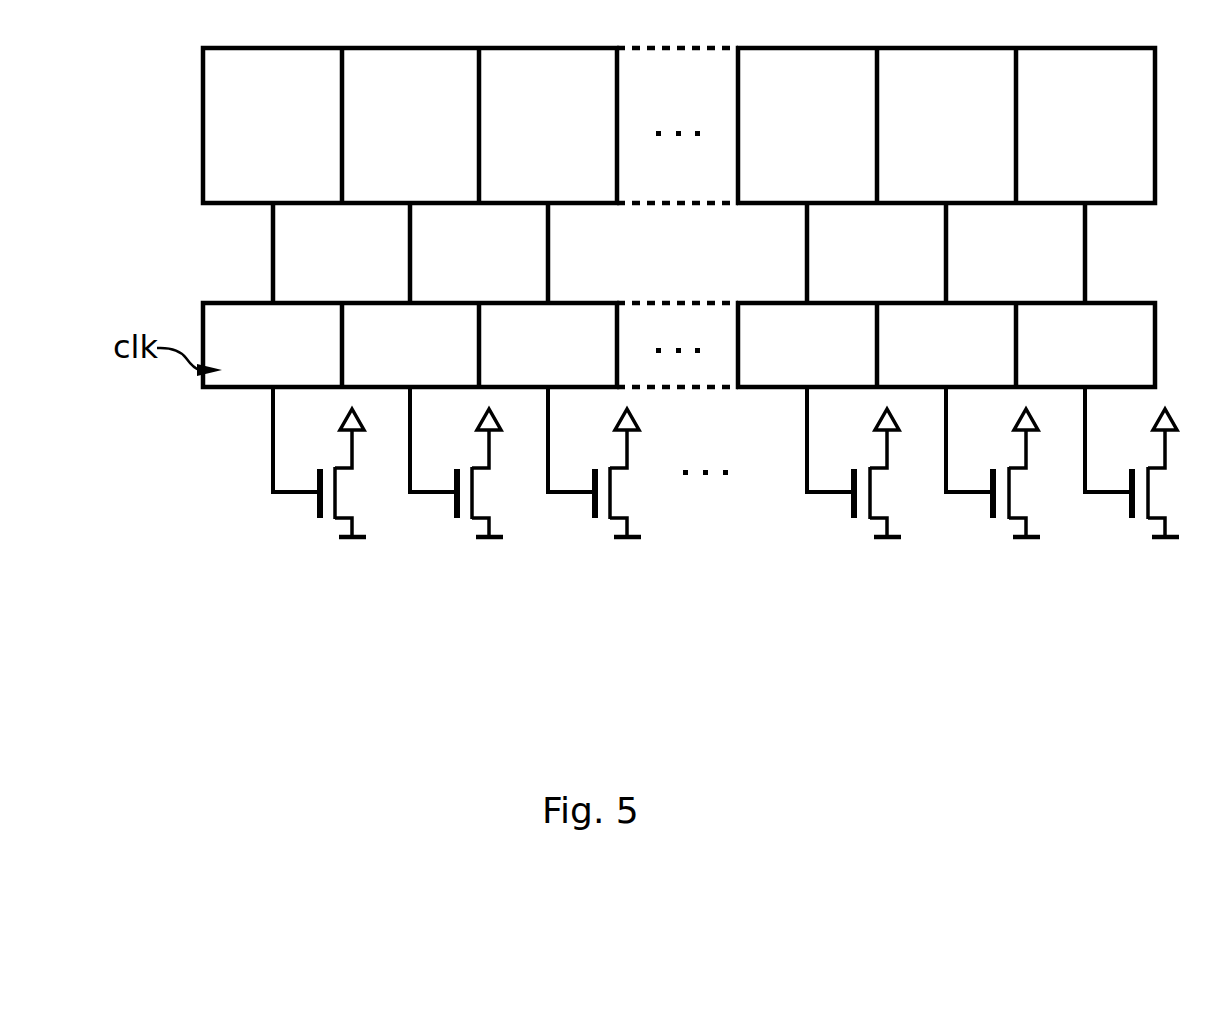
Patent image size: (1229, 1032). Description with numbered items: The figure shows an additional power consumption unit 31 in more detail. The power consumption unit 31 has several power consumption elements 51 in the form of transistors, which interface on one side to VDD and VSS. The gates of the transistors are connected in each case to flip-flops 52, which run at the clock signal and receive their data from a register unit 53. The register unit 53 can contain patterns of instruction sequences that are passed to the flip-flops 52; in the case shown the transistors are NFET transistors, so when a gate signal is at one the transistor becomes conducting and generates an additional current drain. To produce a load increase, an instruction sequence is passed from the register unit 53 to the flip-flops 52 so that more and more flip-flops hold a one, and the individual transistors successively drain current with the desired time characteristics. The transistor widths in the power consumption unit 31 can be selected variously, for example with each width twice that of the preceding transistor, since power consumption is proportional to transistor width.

The register unit 53 is at (213, 120).
The flip-flops 52 is at (218, 308).
The power consumption elements 51 is at (338, 504).
The power consumption unit 31 is at (732, 536).